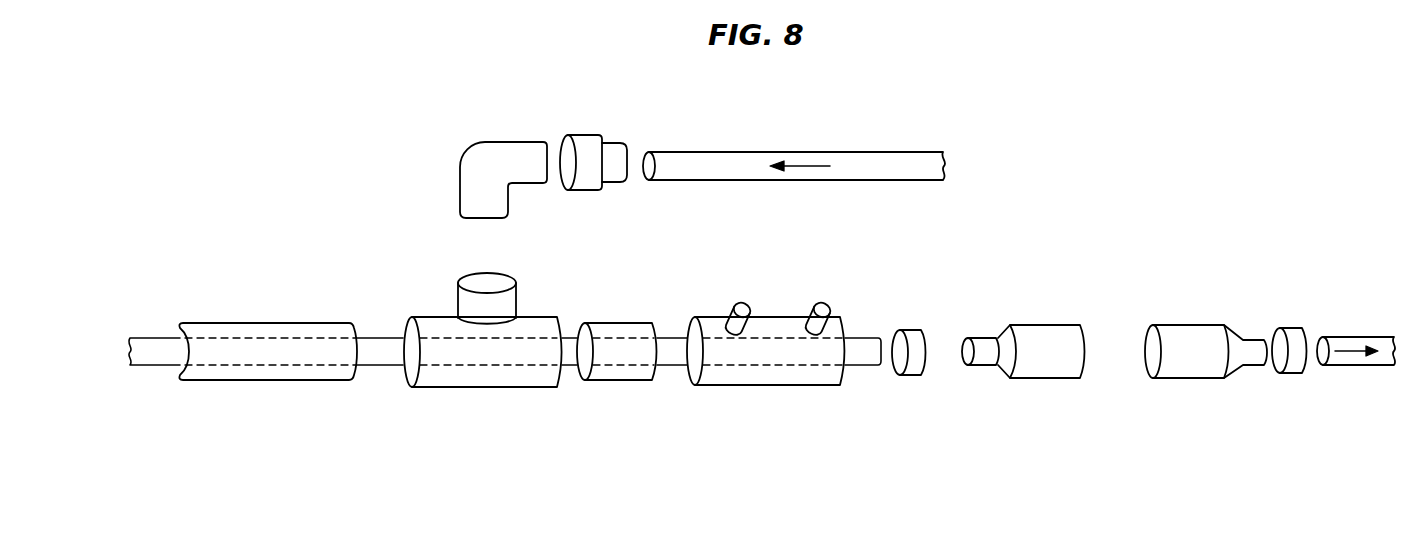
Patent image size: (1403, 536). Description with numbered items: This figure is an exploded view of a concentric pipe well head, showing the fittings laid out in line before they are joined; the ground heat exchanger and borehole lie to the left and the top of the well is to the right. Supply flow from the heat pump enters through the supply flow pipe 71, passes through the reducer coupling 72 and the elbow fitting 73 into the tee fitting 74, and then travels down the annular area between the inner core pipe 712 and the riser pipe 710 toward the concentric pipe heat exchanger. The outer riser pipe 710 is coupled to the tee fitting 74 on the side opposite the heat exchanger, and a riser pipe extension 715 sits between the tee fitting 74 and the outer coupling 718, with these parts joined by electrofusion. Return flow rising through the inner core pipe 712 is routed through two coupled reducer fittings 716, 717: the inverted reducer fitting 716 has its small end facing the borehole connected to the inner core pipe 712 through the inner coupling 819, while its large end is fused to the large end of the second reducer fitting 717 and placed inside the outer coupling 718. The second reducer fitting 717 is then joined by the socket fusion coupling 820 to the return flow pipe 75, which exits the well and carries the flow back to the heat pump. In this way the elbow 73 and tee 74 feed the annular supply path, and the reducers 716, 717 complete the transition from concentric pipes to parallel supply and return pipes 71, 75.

The supply flow pipe 71 is at (853, 151).
The reducer coupling 72 is at (573, 134).
The elbow fitting 73 is at (465, 171).
The tee fitting 74 is at (533, 316).
The return flow pipe 75 is at (1357, 366).
The riser pipe 710 is at (292, 322).
The inner core pipe 712 is at (150, 338).
The riser pipe extension 715 is at (616, 322).
The inverted reducer fitting 716 is at (1043, 379).
The reducer fitting 717 is at (1187, 380).
The outer coupling 718 is at (750, 387).
The inner coupling 819 is at (914, 377).
The coupling 820 is at (1290, 375).